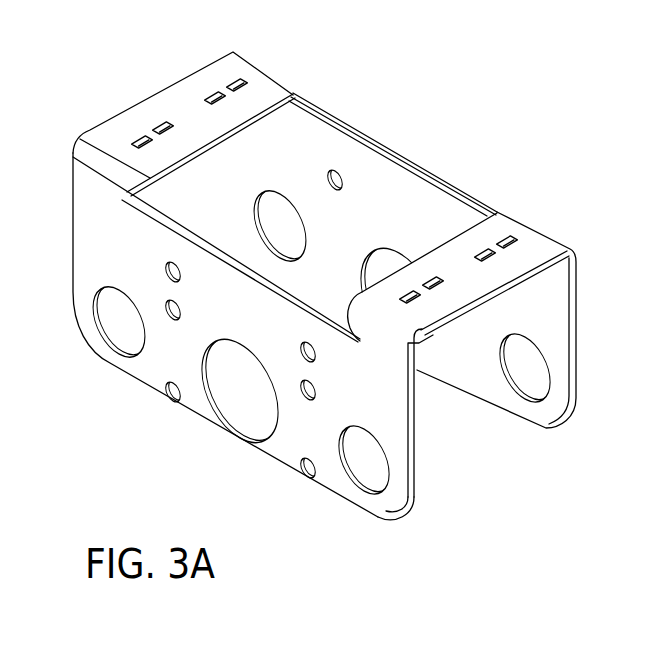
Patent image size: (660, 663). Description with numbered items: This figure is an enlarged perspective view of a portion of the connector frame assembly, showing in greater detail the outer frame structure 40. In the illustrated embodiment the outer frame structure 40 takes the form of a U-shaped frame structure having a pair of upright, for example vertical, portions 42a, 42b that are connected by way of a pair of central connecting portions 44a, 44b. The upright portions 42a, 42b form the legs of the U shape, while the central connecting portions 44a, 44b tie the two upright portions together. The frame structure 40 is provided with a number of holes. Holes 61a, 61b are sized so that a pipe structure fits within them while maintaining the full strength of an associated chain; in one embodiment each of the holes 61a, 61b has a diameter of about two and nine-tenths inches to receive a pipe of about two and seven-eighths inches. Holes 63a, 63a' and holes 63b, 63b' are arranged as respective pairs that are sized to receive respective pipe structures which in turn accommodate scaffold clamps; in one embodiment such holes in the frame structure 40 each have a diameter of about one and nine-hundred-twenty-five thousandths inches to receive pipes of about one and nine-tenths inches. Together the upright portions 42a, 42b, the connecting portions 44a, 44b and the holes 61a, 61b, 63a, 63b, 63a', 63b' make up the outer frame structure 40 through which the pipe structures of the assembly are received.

The outer frame structure 40 is at (158, 92).
The upright portion 42a is at (417, 417).
The upright portion 42b is at (578, 323).
The central connecting portion 44a is at (188, 118).
The central connecting portion 44b is at (466, 278).
The hole 61a is at (242, 408).
The hole 61b is at (388, 264).
The hole 63a is at (118, 350).
The hole 63b is at (358, 485).
The hole 63a' is at (301, 158).
The hole 63b' is at (527, 399).